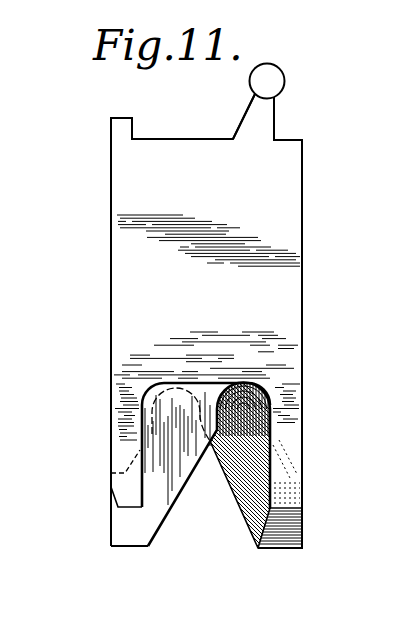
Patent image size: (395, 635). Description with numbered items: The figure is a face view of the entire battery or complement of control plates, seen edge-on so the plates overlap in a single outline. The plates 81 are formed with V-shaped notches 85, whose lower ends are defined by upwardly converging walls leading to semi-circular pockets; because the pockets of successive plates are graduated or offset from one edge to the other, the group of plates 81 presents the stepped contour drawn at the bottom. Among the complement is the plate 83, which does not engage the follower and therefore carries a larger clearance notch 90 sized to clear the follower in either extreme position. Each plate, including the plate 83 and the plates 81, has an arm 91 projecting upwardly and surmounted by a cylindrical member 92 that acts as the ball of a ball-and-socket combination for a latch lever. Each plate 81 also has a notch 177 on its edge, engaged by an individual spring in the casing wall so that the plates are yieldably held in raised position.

The plate 83 is at (285, 365).
The cylindrical member 92 is at (272, 73).
The arm 91 is at (265, 110).
The notch 177 is at (106, 361).
The notch 90 is at (270, 418).
The V-shaped notch 85 is at (240, 503).
The plate 81 is at (300, 523).